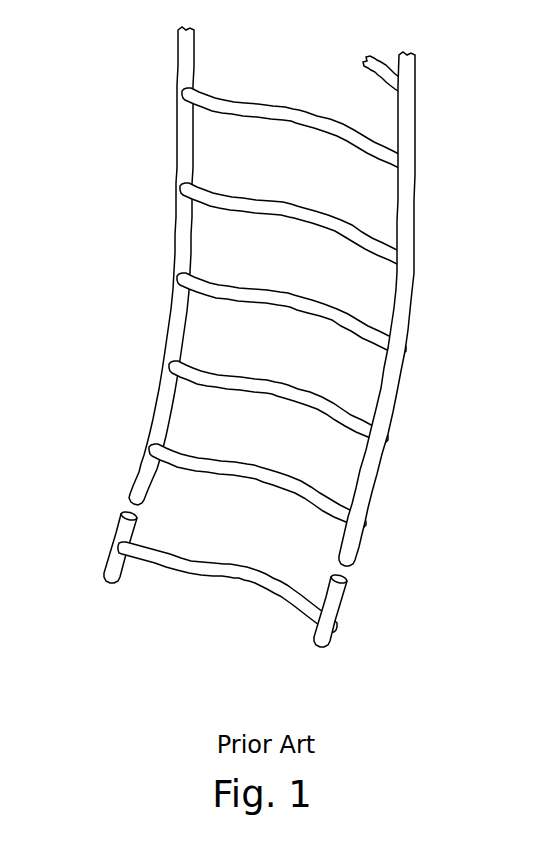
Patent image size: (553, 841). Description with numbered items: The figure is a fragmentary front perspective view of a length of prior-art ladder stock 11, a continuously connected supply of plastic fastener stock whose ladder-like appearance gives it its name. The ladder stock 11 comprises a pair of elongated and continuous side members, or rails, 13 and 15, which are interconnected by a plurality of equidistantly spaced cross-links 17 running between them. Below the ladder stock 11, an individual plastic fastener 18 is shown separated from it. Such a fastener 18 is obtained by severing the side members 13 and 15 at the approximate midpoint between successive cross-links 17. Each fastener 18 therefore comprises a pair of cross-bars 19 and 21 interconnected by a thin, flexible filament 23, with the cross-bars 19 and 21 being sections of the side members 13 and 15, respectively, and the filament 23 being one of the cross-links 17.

The ladder stock 11 is at (308, 296).
The side member 13 is at (411, 138).
The side member 15 is at (187, 143).
The cross-links 17 is at (281, 207).
The plastic fastener 18 is at (224, 578).
The cross-bar 19 is at (341, 612).
The cross-bar 21 is at (107, 552).
The filament 23 is at (244, 562).